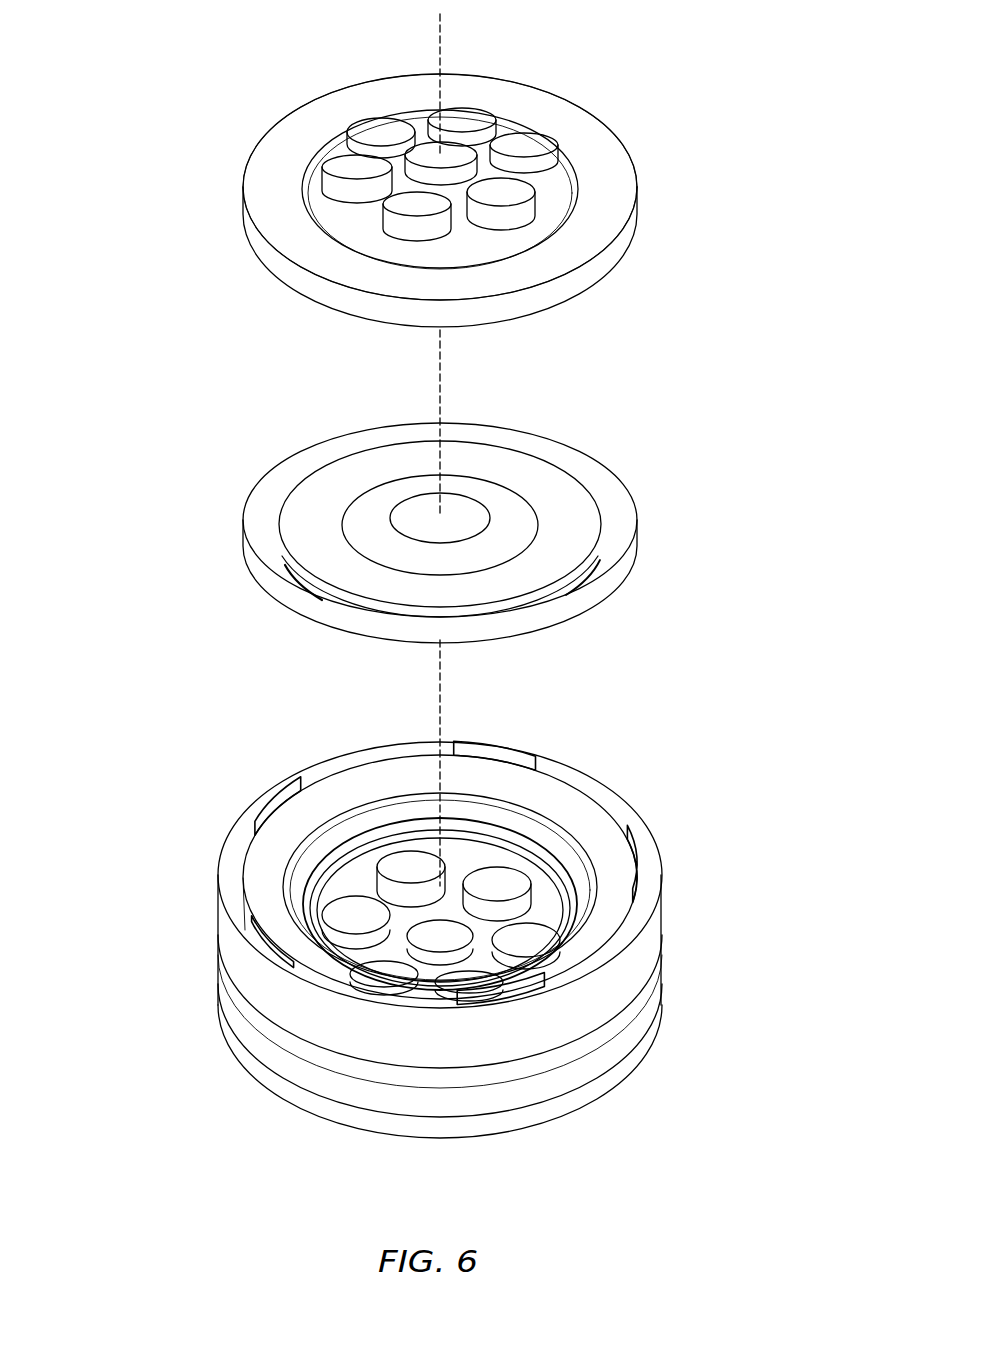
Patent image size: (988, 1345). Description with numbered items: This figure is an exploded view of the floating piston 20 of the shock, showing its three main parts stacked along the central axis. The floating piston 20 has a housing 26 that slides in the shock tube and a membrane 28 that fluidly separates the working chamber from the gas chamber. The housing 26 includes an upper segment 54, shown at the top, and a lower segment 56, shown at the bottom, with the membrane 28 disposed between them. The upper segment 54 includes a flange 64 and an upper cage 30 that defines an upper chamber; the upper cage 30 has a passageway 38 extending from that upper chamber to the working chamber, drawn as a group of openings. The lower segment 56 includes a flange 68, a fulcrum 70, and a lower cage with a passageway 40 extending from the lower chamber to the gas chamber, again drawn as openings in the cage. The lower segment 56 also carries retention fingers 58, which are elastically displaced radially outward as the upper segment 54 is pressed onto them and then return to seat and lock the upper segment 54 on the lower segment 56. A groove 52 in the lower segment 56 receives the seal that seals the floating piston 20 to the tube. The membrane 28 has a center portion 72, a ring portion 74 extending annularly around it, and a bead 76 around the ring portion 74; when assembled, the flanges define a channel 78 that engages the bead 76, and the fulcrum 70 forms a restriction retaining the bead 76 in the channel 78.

The floating piston 20 is at (775, 116).
The housing 26 is at (177, 897).
The membrane 28 is at (560, 428).
The upper cage 30 is at (333, 152).
The passageway 38 is at (537, 155).
The passageway 40 is at (538, 940).
The groove 52 is at (275, 1050).
The upper segment 54 is at (338, 84).
The lower segment 56 is at (690, 968).
The retention fingers 58 is at (290, 782).
The flange 64 is at (605, 187).
The flange 68 is at (375, 808).
The fulcrum 70 is at (305, 967).
The center portion 72 is at (463, 512).
The ring portion 74 is at (333, 478).
The bead 76 is at (270, 490).
The channel 78 is at (262, 903).